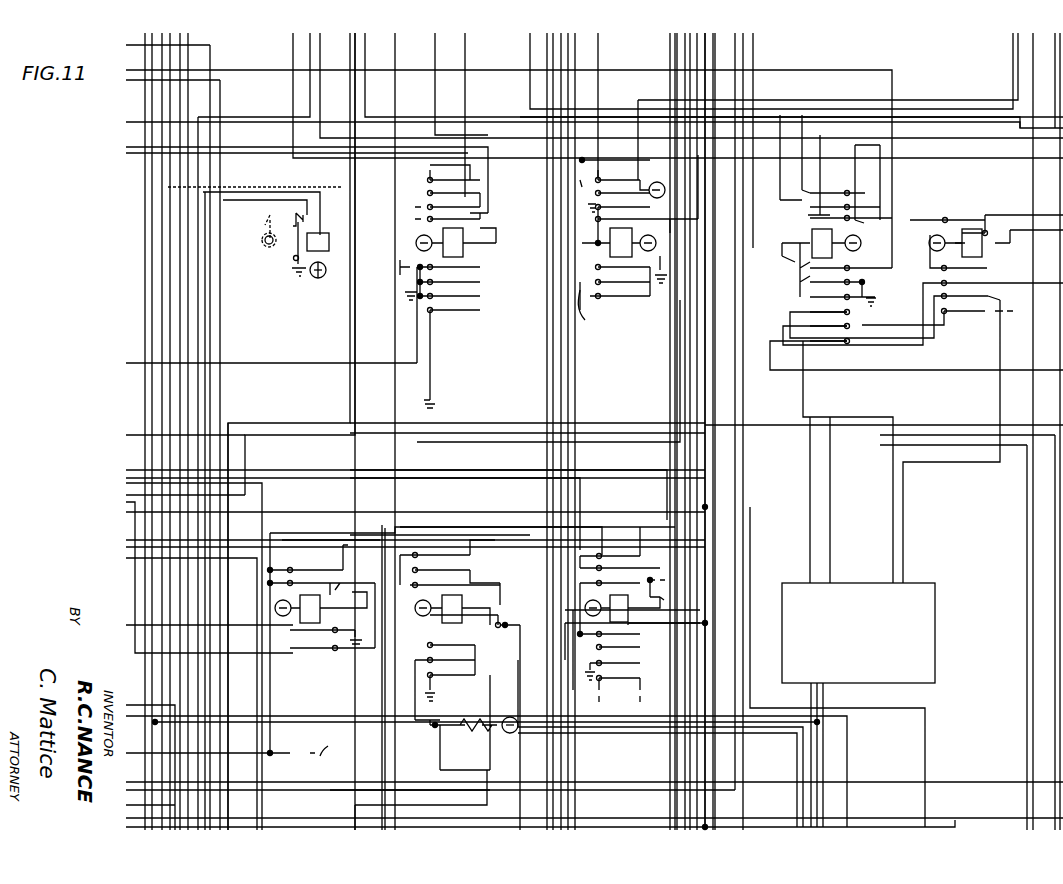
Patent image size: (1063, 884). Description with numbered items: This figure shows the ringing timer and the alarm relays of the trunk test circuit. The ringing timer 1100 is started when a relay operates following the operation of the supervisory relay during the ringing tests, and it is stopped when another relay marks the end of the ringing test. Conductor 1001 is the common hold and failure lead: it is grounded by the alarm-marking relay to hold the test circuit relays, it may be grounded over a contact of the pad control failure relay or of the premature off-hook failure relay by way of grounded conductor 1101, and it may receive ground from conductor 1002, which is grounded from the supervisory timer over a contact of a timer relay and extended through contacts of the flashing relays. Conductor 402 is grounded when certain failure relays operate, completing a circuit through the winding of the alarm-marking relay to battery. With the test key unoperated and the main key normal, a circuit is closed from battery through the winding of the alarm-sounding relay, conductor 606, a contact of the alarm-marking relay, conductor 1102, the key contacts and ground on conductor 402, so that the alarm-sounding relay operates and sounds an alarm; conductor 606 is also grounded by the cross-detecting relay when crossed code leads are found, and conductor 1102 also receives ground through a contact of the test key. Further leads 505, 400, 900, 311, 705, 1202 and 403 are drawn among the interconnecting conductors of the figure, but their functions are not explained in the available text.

The conductor 1002 is at (229, 117).
The conductor 606 is at (583, 58).
The conductor 402 is at (755, 60).
The conductor 505 is at (212, 173).
The conductor 1102 is at (893, 165).
The call timer circuit 400 is at (148, 311).
The conductor 900 is at (152, 343).
The conductor 311 is at (215, 395).
The conductor 1001 is at (703, 372).
The conductor 705 is at (263, 497).
The ringing timer 1100 is at (831, 583).
The grounded conductor 1101 is at (270, 692).
The conductor 1202 is at (380, 786).
The conductor 403 is at (588, 790).